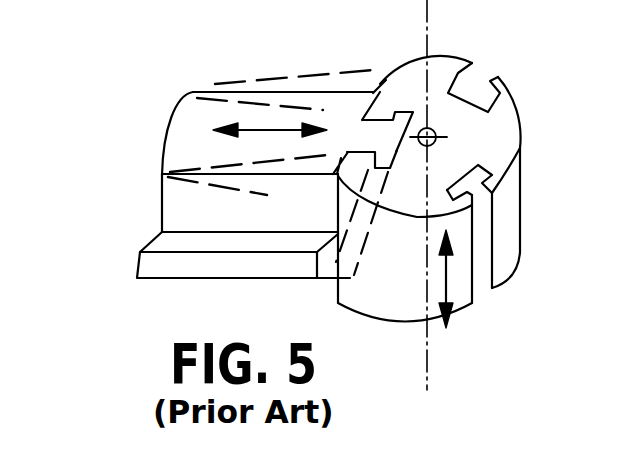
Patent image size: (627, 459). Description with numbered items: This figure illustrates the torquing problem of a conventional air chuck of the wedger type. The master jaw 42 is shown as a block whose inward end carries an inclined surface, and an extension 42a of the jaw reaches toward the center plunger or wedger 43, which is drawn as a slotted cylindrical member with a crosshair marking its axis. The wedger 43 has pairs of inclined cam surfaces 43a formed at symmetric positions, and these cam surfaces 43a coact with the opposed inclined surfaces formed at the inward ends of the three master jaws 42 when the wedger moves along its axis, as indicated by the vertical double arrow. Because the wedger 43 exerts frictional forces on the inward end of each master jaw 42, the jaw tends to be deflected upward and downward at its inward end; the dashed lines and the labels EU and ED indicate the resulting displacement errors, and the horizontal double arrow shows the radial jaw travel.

The master jaw 42 is at (176, 206).
The key/cylindrical portion of slide 42a is at (384, 170).
The center plunger or wedger 43 is at (510, 128).
The inclined cam surfaces 43a is at (406, 98).